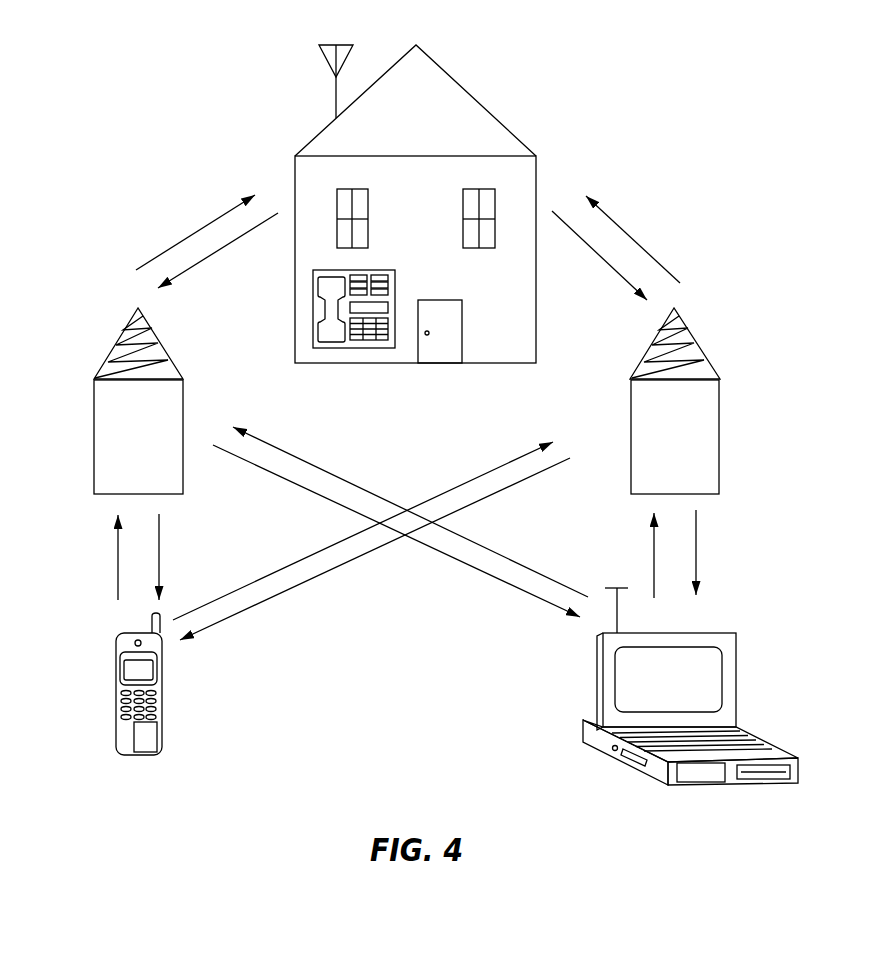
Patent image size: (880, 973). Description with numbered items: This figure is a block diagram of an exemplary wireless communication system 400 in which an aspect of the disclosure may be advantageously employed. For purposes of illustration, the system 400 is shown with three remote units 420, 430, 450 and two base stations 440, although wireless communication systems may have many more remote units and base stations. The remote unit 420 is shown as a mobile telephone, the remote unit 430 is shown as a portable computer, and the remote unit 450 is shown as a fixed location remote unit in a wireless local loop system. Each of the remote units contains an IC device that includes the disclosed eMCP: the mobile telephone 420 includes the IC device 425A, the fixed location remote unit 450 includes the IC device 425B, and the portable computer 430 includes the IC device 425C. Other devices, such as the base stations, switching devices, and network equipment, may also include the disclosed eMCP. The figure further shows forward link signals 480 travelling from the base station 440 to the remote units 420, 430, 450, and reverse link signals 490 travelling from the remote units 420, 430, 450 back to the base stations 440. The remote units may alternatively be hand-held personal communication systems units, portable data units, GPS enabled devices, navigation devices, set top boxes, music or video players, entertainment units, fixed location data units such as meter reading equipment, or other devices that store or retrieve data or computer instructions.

The wireless communication system 400 is at (133, 55).
The remote unit 420 is at (118, 645).
The IC device 425A is at (148, 740).
The IC device 425B is at (368, 354).
The IC device 425C is at (708, 773).
The remote unit 430 is at (715, 633).
The base station 440 is at (118, 343).
The remote unit 450 is at (312, 317).
The forward link signal 480 is at (202, 223).
The reverse link signal 490 is at (205, 263).